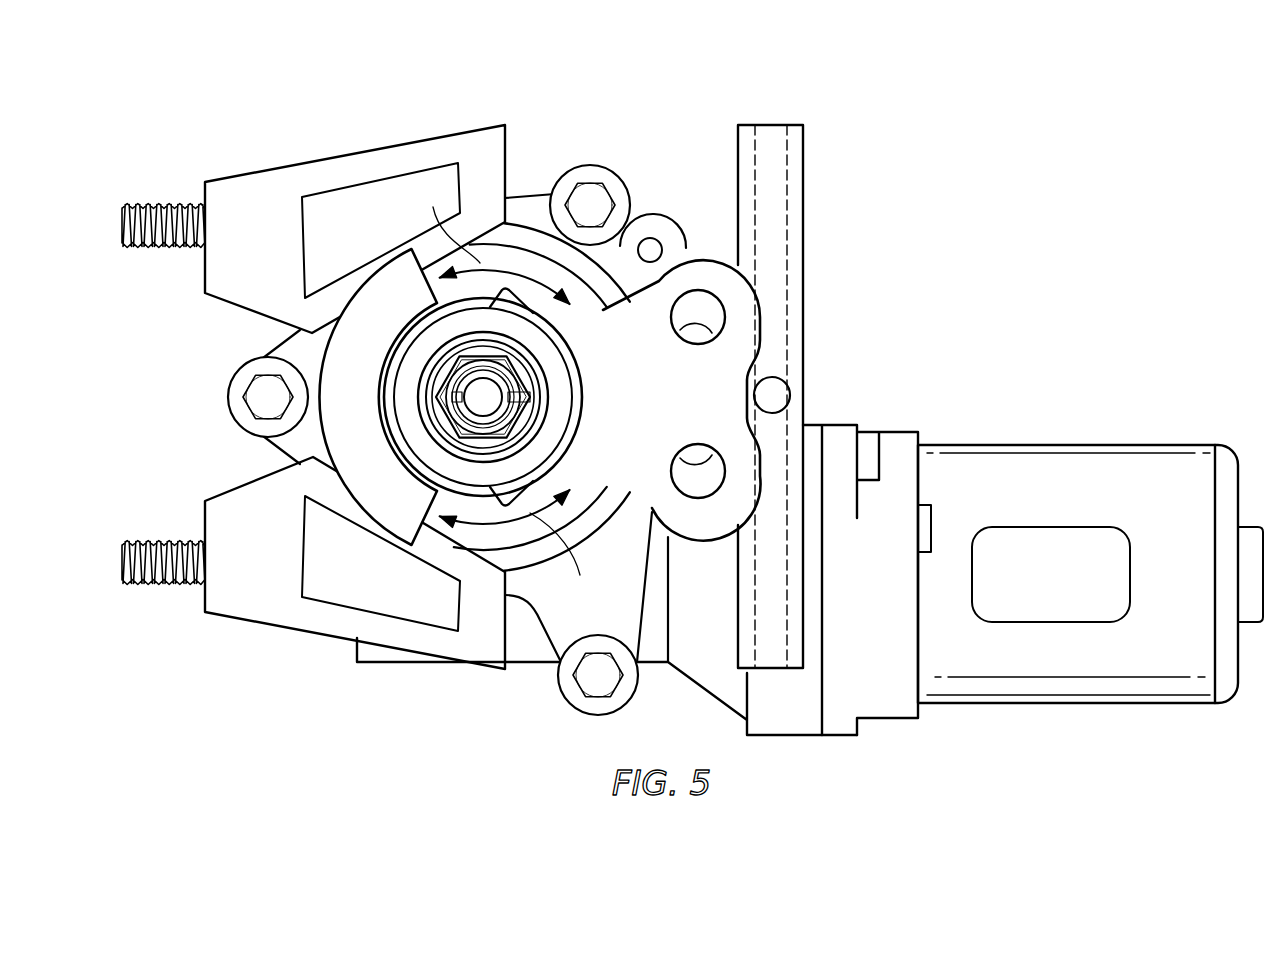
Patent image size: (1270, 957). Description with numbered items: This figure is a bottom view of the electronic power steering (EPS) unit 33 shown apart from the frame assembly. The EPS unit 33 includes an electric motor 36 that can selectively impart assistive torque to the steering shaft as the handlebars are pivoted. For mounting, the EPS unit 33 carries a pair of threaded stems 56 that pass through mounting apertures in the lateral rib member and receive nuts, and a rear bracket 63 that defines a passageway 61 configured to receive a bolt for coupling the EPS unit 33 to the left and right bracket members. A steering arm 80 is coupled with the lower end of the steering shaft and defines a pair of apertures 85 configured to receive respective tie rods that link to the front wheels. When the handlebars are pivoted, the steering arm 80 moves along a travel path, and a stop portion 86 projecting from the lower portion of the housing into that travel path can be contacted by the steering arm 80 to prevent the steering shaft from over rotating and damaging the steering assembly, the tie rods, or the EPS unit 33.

The electronic power steering (EPS) unit 33 is at (279, 90).
The electric motor 36 is at (1143, 446).
The threaded stems 56 is at (163, 200).
The passageway 61 is at (784, 152).
The rear bracket 63 is at (792, 222).
The steering arm 80 is at (702, 534).
The apertures 85 is at (688, 332).
The stop portion 86 is at (398, 283).